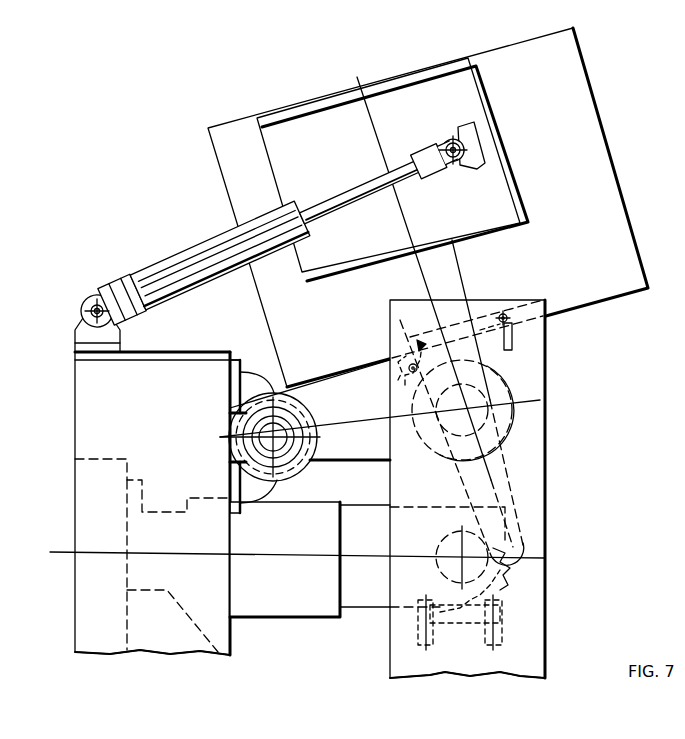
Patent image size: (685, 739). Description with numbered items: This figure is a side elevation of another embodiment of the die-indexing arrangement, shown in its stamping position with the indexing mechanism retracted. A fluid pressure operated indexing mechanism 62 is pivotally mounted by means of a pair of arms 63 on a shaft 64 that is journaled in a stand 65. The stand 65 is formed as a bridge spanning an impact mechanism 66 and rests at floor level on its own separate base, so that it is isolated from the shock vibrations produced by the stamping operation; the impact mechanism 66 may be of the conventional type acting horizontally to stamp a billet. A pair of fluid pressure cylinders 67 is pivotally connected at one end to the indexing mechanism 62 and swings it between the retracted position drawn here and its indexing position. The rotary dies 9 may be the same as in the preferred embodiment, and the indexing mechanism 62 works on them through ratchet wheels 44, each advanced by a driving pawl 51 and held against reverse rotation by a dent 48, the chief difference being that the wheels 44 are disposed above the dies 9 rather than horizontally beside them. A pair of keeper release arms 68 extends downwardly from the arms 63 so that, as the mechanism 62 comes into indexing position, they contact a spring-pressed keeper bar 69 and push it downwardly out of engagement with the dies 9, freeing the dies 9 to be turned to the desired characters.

The rotary dies 9 is at (493, 572).
The ratchet wheel 44 is at (483, 362).
The dent 48 is at (408, 366).
The driving pawl 51 is at (508, 333).
The fluid pressure operated indexing mechanism 62 is at (627, 211).
The arms 63 is at (369, 450).
The shaft 64 is at (302, 472).
The stand 65 is at (82, 412).
The impact mechanism 66 is at (306, 610).
The fluid pressure cylinders 67 is at (188, 256).
The keeper release arms 68 is at (500, 493).
The spring-pressed keeper bar 69 is at (507, 620).